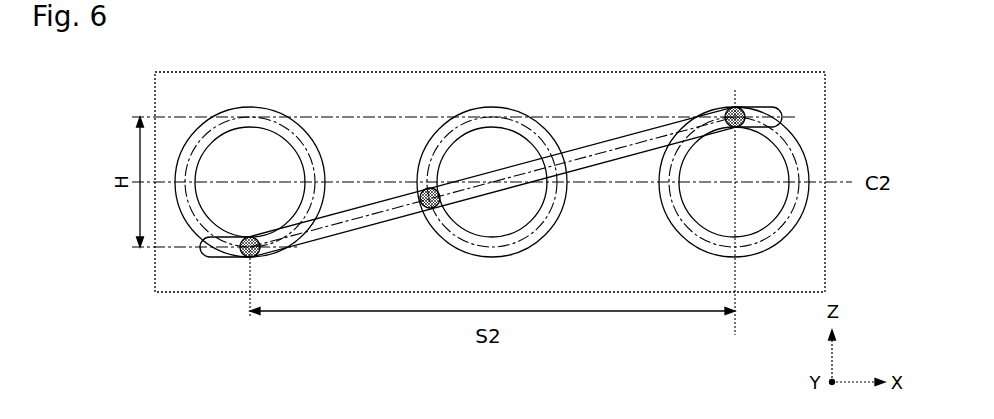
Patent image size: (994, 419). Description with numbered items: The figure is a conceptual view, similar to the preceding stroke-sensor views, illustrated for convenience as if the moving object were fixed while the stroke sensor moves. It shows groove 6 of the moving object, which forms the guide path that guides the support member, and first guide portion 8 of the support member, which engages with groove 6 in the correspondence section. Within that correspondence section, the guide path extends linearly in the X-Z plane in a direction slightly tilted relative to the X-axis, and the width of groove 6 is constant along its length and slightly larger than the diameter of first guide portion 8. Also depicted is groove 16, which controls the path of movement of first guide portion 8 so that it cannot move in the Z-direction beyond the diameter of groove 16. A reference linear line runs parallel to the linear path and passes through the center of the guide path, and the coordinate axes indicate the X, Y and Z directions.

The groove 6 is at (360, 210).
The groove 16 is at (500, 117).
The first guide portion 8 is at (258, 254).